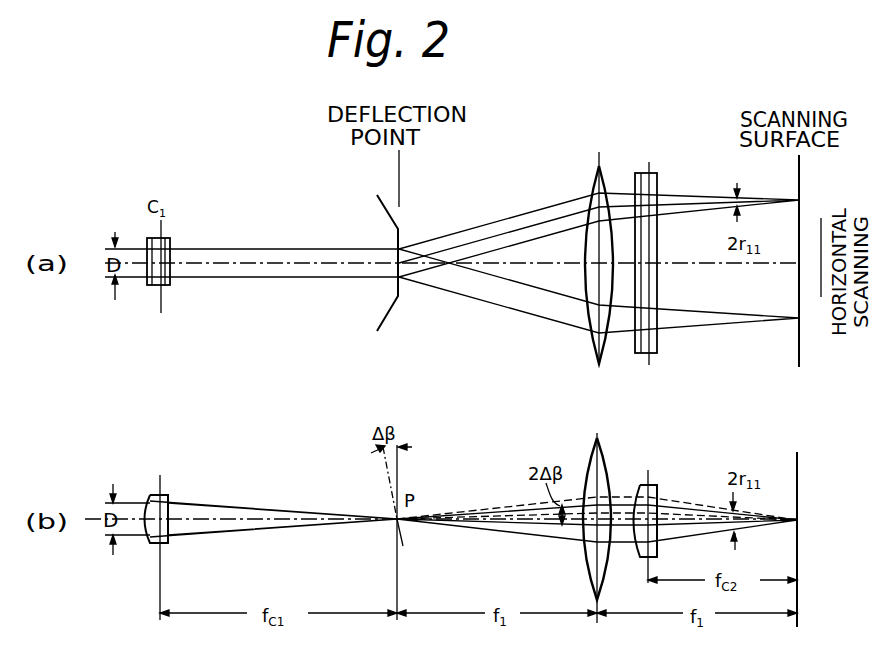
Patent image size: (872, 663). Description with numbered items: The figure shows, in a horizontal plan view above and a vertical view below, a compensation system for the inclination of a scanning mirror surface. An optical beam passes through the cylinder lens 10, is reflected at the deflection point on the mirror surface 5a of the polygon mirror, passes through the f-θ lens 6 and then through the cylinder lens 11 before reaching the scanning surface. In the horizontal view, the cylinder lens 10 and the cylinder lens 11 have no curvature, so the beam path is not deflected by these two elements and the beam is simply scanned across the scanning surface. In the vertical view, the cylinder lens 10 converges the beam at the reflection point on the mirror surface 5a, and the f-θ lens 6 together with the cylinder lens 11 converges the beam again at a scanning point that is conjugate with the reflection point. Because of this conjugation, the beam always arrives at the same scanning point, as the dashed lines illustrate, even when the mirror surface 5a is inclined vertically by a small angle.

The cylinder lens 10 is at (168, 239).
The mirror surface 5a is at (396, 221).
The f-θ lens 6 is at (586, 192).
The cylinder mirror (or cylinder lens) 11 is at (657, 174).